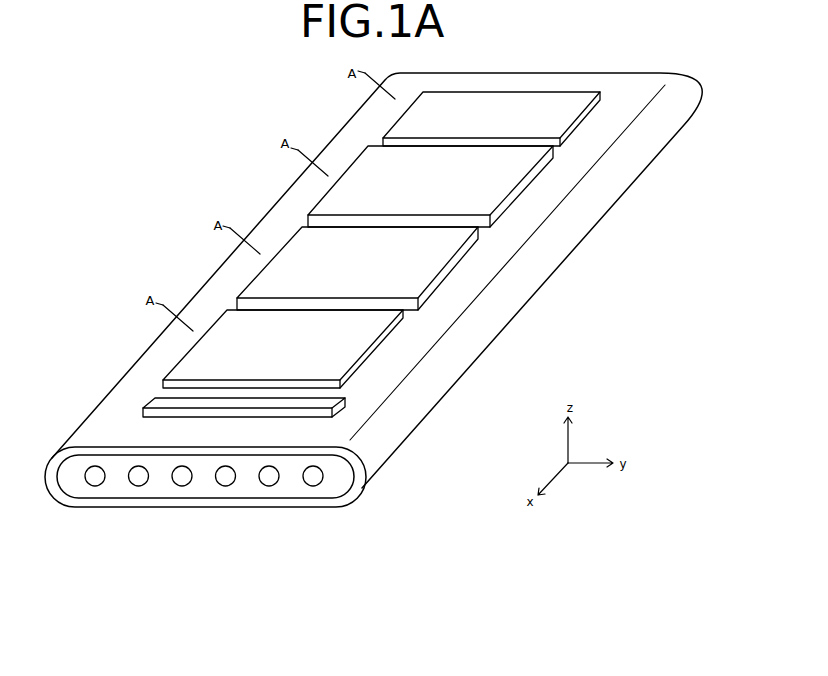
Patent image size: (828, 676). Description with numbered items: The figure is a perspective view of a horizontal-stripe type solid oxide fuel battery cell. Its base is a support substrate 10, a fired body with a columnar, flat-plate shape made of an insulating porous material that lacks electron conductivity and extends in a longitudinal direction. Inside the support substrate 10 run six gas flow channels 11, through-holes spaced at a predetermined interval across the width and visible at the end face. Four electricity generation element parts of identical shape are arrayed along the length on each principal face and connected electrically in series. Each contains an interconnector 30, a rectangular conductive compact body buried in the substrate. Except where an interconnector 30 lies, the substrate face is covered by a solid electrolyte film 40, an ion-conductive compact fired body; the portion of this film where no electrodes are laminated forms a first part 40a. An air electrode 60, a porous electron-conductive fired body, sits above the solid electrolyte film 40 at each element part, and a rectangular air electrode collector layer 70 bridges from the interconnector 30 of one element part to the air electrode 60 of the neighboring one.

The support substrate 10 is at (345, 475).
The gas flow channels 11 is at (270, 480).
The interconnector 30 is at (323, 403).
The solid electrolyte film 40 is at (362, 462).
The first part 40a is at (112, 423).
The air electrode 60 is at (570, 117).
The air electrode collector layer 70 is at (517, 183).